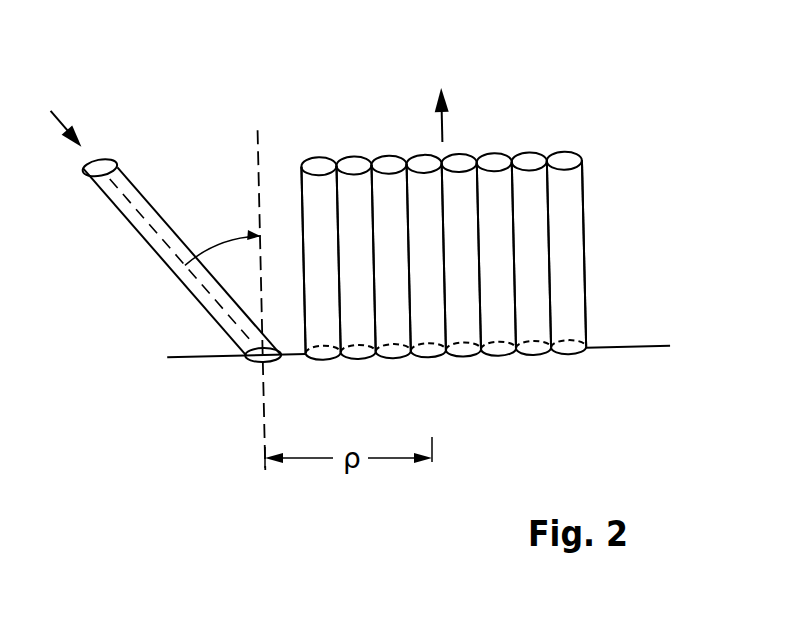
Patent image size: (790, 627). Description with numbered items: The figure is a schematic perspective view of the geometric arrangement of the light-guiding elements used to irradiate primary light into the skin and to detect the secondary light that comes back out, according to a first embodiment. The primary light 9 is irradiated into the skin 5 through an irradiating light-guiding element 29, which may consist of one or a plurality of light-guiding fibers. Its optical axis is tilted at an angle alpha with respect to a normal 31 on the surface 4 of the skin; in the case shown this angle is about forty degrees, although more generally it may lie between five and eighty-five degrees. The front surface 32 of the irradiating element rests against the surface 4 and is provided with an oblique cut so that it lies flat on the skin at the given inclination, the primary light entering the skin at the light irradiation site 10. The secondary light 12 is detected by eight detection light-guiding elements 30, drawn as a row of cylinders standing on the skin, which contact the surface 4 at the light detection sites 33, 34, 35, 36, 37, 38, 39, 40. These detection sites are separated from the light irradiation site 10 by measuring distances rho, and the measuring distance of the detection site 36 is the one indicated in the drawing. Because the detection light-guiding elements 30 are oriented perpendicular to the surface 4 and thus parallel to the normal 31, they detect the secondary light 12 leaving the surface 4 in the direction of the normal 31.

The surface 4 is at (645, 347).
The skin 5 is at (677, 407).
The primary light 9 is at (57, 112).
The light irradiation site 10 is at (270, 330).
The secondary light 12 is at (442, 130).
The irradiating light-guiding element 29 is at (155, 212).
The detection light-guiding elements 30 is at (568, 252).
The normal 31 is at (258, 140).
The front surface 32 is at (253, 362).
The light detection site 33 is at (325, 355).
The light detection site 34 is at (362, 355).
The light detection site 35 is at (397, 354).
The light detection site 36 is at (432, 353).
The light detection site 37 is at (467, 352).
The light detection site 38 is at (503, 352).
The light detection site 39 is at (538, 351).
The light detection site 40 is at (573, 351).